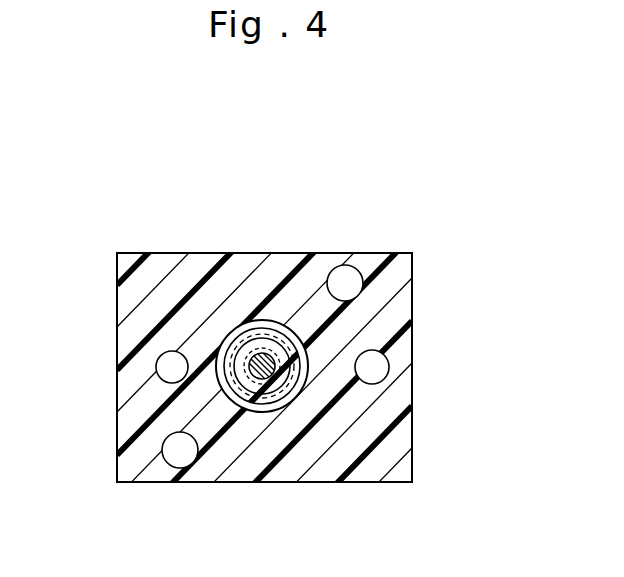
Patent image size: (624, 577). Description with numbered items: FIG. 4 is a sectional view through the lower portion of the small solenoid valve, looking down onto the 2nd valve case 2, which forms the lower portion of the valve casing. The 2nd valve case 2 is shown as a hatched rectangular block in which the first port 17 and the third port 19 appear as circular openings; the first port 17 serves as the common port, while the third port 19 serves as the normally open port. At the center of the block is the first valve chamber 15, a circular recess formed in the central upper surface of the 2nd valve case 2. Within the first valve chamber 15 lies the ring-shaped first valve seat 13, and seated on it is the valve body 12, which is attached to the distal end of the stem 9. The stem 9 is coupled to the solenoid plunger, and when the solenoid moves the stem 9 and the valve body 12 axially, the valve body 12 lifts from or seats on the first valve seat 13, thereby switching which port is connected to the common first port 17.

The 2nd valve case 2 is at (412, 345).
The stem 9 is at (265, 380).
The valve body 12 is at (290, 395).
The first valve seat 13 is at (243, 393).
The first valve chamber 15 is at (255, 398).
The first port 17 is at (165, 362).
The third port 19 is at (376, 370).